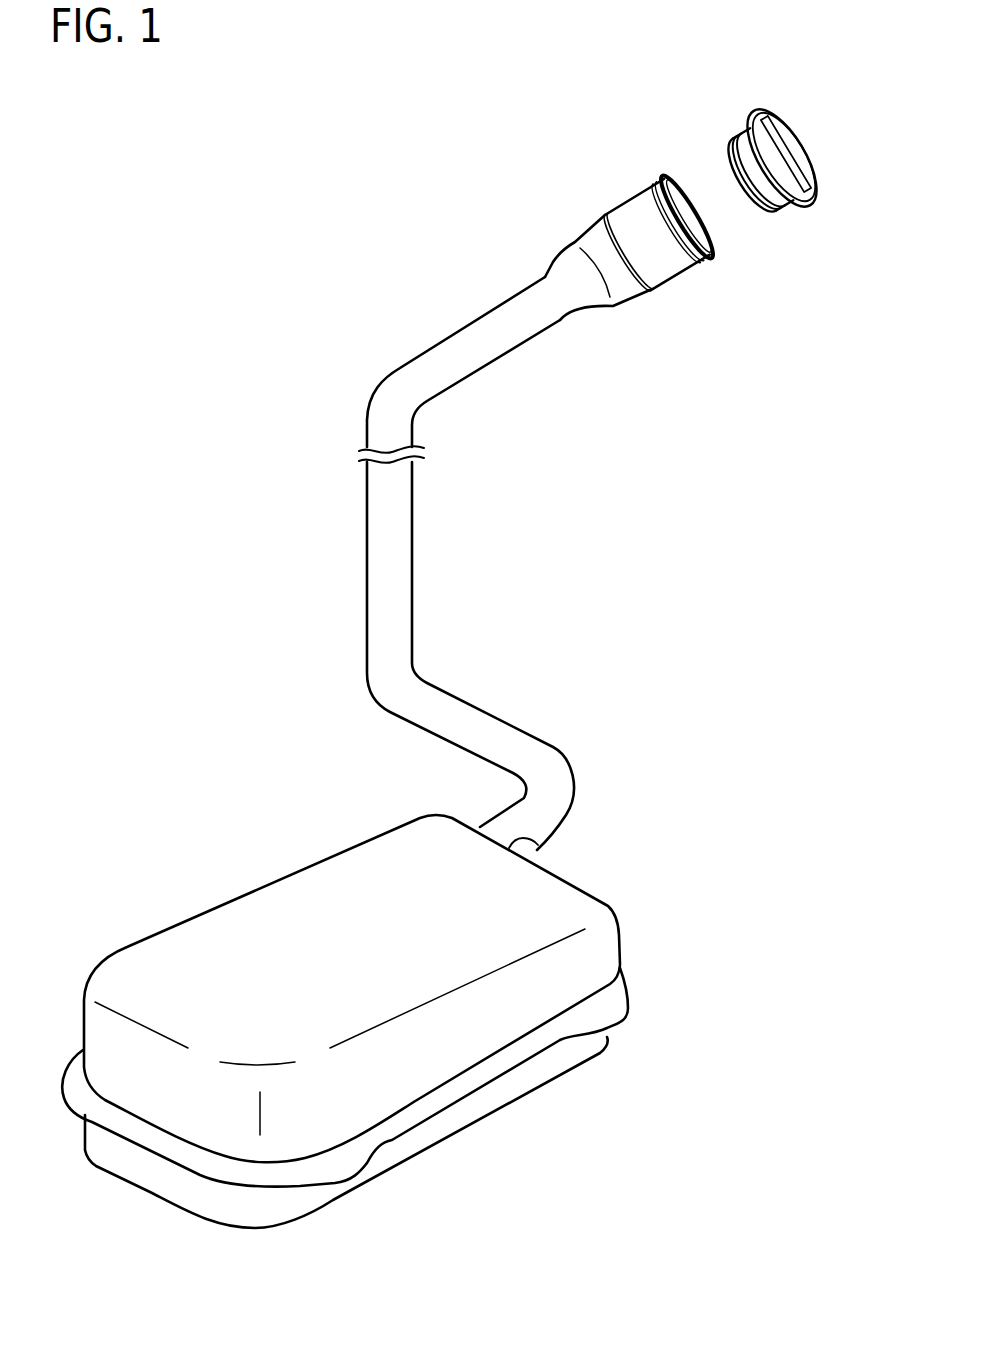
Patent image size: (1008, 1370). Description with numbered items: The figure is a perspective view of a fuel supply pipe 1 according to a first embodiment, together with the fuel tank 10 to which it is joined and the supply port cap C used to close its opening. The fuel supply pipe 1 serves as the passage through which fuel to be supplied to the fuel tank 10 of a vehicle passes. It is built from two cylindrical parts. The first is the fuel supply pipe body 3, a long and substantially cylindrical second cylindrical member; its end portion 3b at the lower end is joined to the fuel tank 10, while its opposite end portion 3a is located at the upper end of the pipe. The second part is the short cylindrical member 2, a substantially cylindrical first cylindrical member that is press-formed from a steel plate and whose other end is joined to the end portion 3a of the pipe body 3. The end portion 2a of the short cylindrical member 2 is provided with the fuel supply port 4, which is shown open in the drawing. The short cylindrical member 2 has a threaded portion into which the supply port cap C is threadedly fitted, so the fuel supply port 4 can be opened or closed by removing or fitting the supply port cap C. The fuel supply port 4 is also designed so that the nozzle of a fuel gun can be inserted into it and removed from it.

The fuel supply pipe 1 is at (270, 408).
The short cylindrical member 2 is at (673, 277).
The end portion 2a is at (663, 173).
The fuel supply pipe body 3 is at (414, 550).
The end portion 3a is at (660, 289).
The end portion 3b is at (540, 848).
The fuel supply port 4 is at (715, 230).
The fuel tank 10 is at (203, 912).
The supply port cap C is at (806, 144).